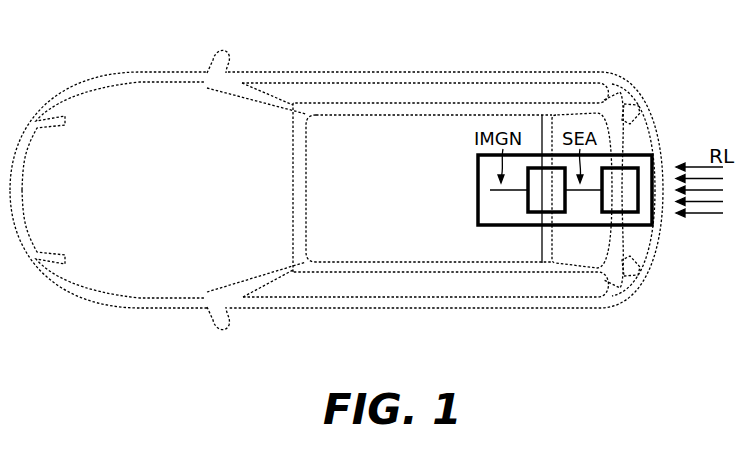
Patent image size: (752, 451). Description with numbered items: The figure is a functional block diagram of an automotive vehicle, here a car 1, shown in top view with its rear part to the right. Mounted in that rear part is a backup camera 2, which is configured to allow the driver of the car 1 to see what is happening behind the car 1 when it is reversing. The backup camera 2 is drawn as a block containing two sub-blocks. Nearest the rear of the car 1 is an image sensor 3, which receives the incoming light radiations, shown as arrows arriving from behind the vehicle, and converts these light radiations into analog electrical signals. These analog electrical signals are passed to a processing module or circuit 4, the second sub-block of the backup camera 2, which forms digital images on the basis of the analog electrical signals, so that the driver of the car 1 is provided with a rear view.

The car 1 is at (593, 62).
The backup camera 2 is at (477, 191).
The image sensor 3 is at (620, 190).
The processing module 4 is at (546, 190).